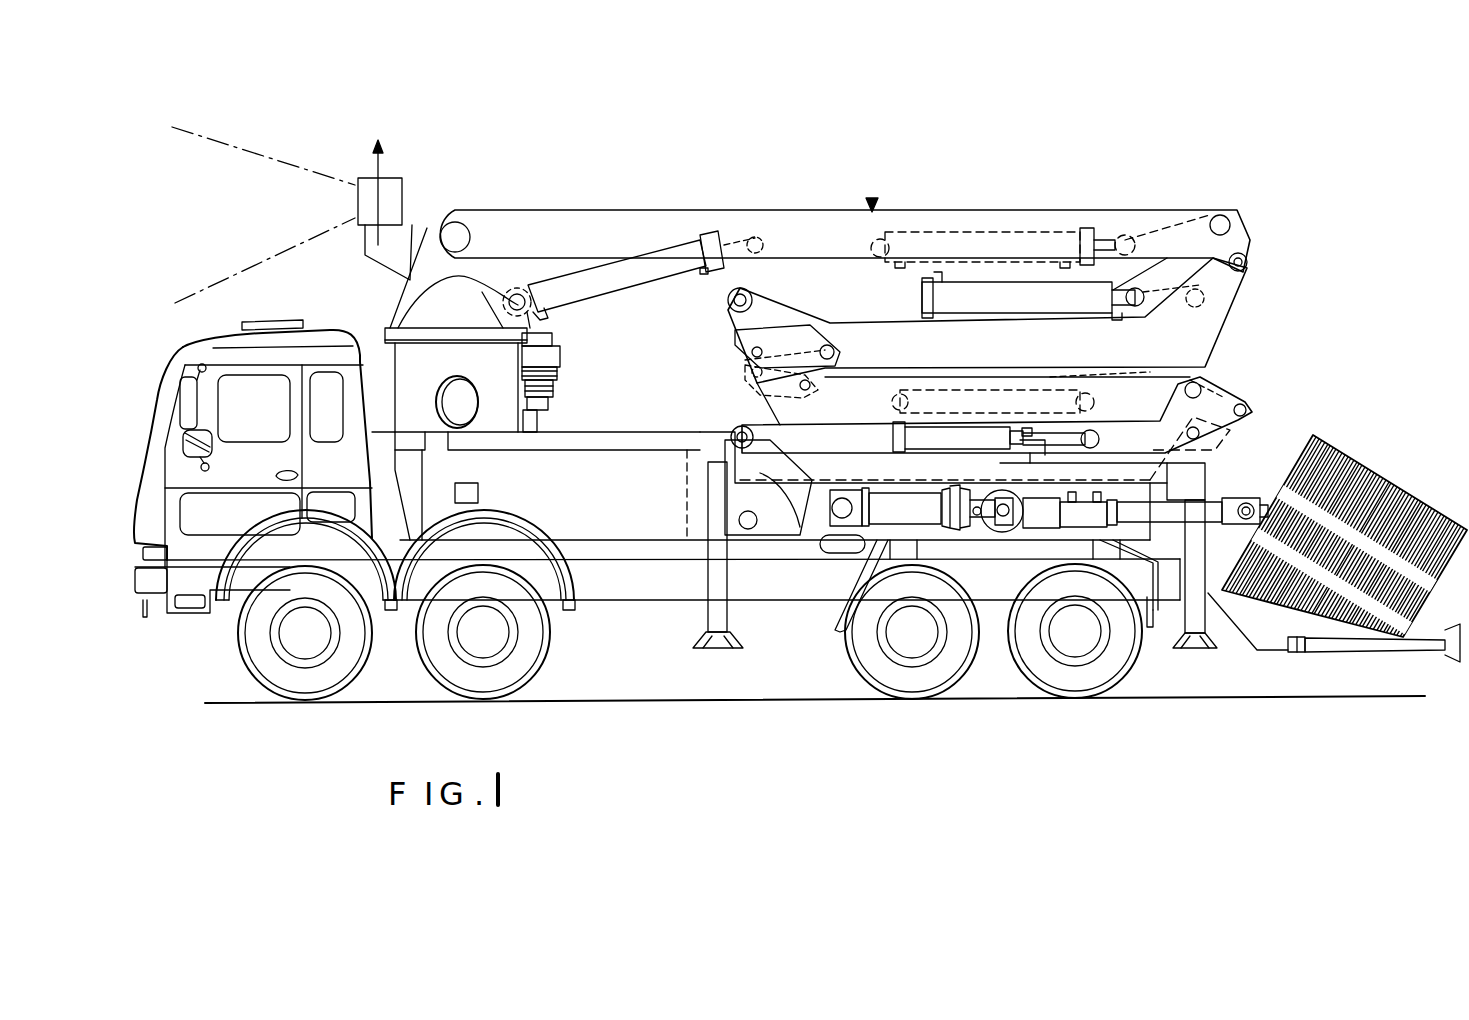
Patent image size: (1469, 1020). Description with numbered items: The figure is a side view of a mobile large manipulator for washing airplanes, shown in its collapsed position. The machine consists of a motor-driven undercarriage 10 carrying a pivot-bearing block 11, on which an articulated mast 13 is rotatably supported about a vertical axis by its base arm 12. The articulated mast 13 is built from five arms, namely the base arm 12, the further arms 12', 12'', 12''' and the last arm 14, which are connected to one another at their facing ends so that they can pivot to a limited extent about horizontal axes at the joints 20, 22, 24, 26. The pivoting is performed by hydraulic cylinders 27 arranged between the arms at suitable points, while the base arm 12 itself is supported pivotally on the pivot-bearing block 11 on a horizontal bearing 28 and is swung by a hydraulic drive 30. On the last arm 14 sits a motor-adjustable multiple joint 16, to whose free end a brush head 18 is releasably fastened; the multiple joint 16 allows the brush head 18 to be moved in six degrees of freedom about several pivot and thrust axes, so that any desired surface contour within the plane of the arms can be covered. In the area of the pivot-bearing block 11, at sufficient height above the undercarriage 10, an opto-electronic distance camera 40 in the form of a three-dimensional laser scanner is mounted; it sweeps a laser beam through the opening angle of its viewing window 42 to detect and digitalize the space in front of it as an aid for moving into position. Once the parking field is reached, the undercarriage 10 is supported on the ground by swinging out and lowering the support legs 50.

The undercarriage 10 is at (612, 585).
The pivot-bearing block 11 is at (472, 300).
The base arm 12 is at (845, 202).
The arm 12' is at (1027, 320).
The arm 12'' is at (1036, 400).
The arm 12''' is at (1040, 436).
The articulated mast 13 is at (872, 205).
The last arm 14 is at (800, 510).
The multiple joint 16 is at (1040, 515).
The brush head 18 is at (1380, 500).
The joint 20 is at (1247, 258).
The joint 22 is at (745, 372).
The joint 24 is at (1247, 407).
The joint 26 is at (722, 432).
The hydraulic cylinders 27 is at (1003, 408).
The horizontal bearing 28 is at (457, 228).
The hydraulic drive 30 is at (585, 285).
The distance camera 40 is at (395, 185).
The viewing window 42 is at (258, 160).
The support legs 50 is at (728, 623).